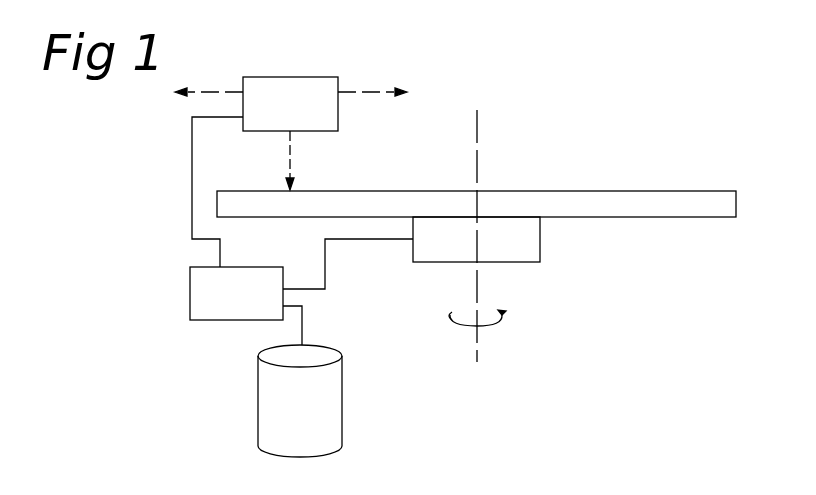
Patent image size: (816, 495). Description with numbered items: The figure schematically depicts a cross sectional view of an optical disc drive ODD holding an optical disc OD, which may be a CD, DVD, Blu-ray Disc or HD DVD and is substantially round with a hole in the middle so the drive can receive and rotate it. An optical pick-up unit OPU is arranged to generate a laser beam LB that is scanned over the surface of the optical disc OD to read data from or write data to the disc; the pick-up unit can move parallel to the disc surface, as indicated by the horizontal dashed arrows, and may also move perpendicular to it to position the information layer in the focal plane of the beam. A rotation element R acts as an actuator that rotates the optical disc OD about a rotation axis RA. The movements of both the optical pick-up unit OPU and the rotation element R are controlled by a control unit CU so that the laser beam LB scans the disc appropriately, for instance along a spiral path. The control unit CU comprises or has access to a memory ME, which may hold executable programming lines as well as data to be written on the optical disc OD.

The optical pick-up unit OPU is at (291, 104).
The laser beam LB is at (292, 163).
The optical disc OD is at (673, 191).
The rotation axis RA is at (477, 161).
The rotation element R is at (476, 239).
The control unit CU is at (301, 231).
The memory ME is at (300, 401).
The optical disc drive ODD is at (572, 307).